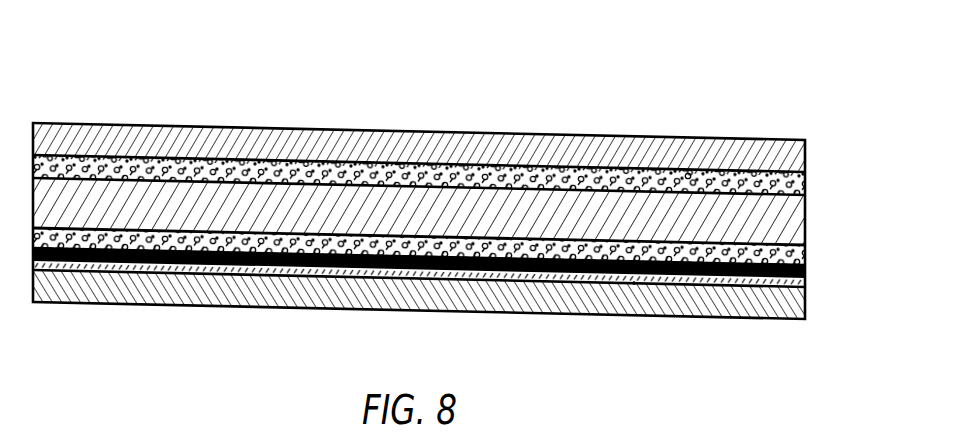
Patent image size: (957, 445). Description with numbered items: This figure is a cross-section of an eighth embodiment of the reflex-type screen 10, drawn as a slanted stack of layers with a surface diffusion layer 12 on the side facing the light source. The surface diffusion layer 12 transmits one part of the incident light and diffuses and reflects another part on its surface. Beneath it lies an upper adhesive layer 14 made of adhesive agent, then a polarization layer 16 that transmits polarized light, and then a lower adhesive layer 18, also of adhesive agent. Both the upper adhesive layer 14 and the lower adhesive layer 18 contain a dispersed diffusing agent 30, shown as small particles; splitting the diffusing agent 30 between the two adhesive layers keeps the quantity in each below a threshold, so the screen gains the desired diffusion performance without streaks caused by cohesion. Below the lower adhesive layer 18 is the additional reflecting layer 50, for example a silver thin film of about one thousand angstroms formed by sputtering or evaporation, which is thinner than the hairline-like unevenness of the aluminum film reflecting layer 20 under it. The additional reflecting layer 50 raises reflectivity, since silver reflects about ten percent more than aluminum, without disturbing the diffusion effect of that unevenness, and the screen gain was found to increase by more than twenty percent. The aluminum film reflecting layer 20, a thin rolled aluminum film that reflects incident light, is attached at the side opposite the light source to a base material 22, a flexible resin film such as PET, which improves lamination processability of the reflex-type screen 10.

The reflex-type screen 10 is at (829, 63).
The surface diffusion layer 12 is at (806, 145).
The upper adhesive layer 14 is at (806, 181).
The polarization layer 16 is at (806, 210).
The lower adhesive layer 18 is at (806, 250).
The additional reflecting layer 50 is at (806, 268).
The aluminum film reflecting layer 20 is at (806, 280).
The base material 22 is at (806, 308).
The diffusing agent 30 is at (686, 170).